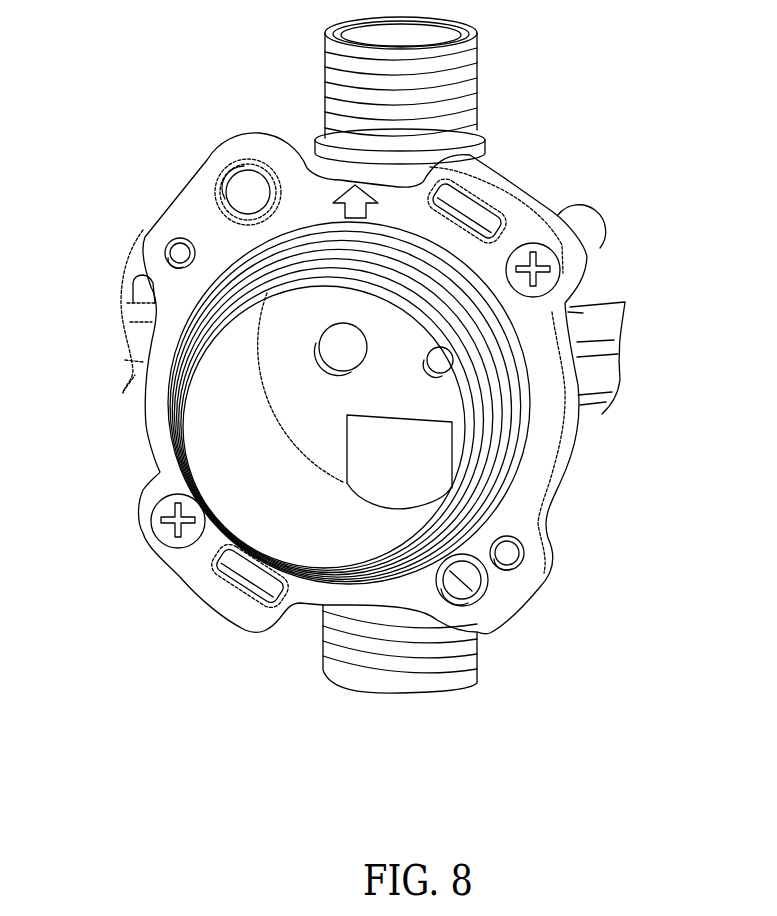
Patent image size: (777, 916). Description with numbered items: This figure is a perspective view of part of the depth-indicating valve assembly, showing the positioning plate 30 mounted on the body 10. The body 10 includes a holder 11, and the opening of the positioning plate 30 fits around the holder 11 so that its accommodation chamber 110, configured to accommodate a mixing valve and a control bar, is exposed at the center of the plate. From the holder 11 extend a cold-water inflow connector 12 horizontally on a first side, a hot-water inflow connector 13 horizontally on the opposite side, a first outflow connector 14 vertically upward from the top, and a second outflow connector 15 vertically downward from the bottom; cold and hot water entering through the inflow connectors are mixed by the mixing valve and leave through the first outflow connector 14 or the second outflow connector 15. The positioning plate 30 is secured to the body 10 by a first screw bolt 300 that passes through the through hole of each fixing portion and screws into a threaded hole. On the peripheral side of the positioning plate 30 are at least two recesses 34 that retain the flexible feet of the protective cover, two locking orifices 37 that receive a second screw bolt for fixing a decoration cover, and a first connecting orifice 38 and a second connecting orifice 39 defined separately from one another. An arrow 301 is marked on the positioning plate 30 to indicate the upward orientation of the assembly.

The body 10 is at (371, 350).
The holder 11 is at (172, 402).
The accommodation chamber 110 is at (207, 448).
The cold-water inflow connector 12 is at (145, 290).
The hot-water inflow connector 13 is at (597, 368).
The first outflow connector 14 is at (323, 88).
The second outflow connector 15 is at (325, 635).
The positioning plate 30 is at (570, 468).
The first screw bolt 300 is at (537, 275).
The arrow 301 is at (354, 192).
The recess 34 is at (483, 217).
The locking orifice 37 is at (175, 252).
The first connecting orifice 38 is at (240, 190).
The second connecting orifice 39 is at (460, 598).